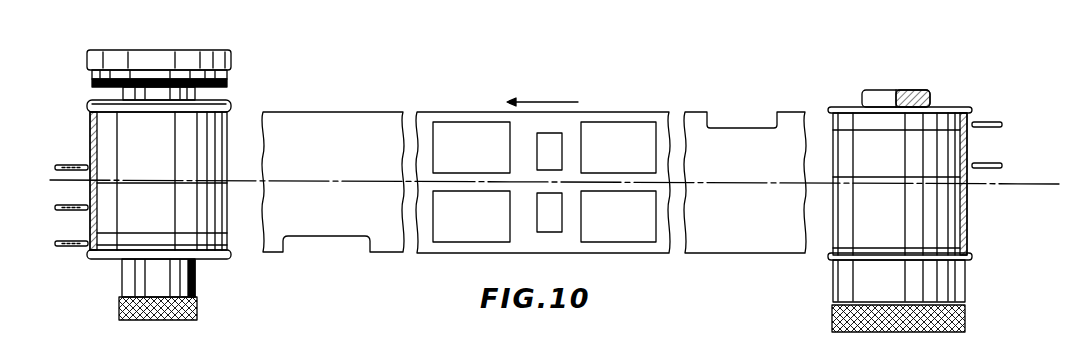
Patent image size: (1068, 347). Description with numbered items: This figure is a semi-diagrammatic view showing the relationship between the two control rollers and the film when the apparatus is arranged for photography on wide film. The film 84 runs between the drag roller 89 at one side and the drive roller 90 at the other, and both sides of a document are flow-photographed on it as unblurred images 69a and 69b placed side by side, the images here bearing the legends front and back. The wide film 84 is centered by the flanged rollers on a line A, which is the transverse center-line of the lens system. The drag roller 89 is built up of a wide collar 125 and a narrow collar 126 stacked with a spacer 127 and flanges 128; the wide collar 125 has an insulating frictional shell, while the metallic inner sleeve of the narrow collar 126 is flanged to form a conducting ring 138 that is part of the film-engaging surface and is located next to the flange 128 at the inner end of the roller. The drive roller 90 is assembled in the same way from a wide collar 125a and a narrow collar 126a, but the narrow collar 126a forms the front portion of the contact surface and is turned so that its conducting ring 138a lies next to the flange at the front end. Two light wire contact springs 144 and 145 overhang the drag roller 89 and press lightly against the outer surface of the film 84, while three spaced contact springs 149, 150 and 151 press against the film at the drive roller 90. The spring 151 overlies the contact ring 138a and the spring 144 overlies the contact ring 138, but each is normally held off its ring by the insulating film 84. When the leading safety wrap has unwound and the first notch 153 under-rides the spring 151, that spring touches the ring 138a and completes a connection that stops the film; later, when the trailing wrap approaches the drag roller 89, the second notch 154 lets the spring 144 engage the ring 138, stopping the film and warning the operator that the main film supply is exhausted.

The film 84 is at (526, 185).
The drag roller 89 is at (926, 198).
The drive roller 90 is at (139, 185).
The wide collar 125 is at (955, 233).
The wide collar 125a is at (110, 120).
The narrow collar 126 is at (955, 155).
The narrow collar 126a is at (110, 240).
The spacer 127 is at (955, 282).
The flange 128 is at (968, 110).
The conducting ring 138 is at (930, 120).
The conducting ring 138a is at (122, 250).
The contact spring 144 is at (1002, 126).
The contact spring 145 is at (1000, 168).
The contact spring 149 is at (62, 164).
The contact spring 150 is at (61, 204).
The contact spring 151 is at (62, 240).
The first notch 153 is at (336, 240).
The second notch 154 is at (745, 128).
The image 69a is at (641, 128).
The image 69b is at (633, 236).
The line A is at (1005, 187).